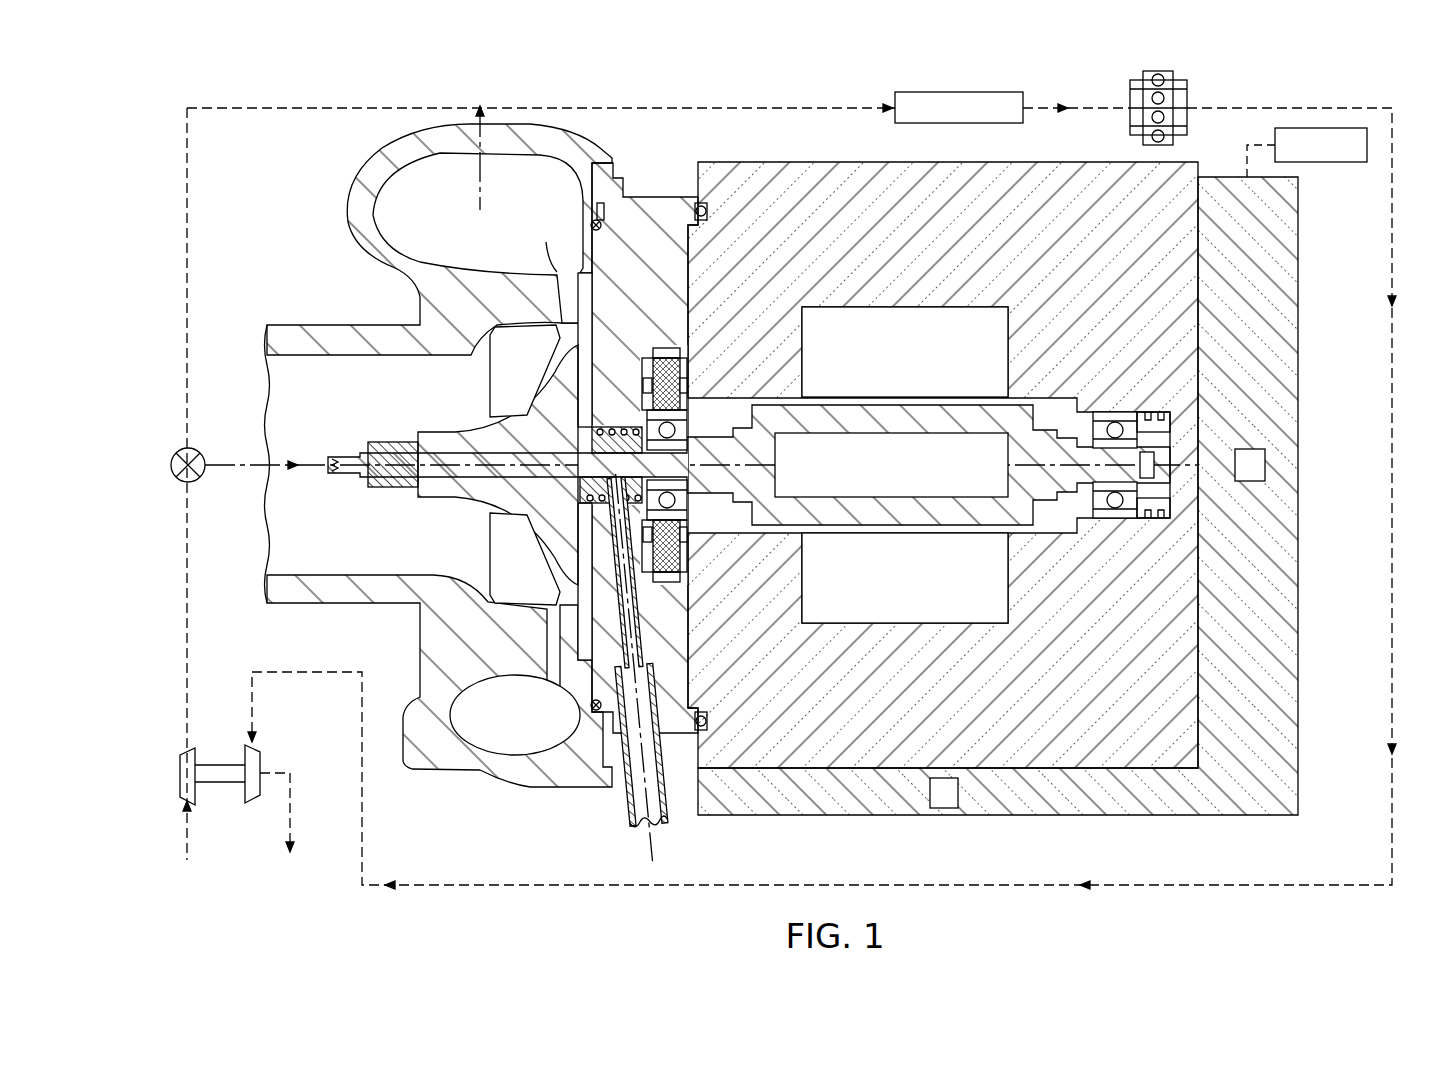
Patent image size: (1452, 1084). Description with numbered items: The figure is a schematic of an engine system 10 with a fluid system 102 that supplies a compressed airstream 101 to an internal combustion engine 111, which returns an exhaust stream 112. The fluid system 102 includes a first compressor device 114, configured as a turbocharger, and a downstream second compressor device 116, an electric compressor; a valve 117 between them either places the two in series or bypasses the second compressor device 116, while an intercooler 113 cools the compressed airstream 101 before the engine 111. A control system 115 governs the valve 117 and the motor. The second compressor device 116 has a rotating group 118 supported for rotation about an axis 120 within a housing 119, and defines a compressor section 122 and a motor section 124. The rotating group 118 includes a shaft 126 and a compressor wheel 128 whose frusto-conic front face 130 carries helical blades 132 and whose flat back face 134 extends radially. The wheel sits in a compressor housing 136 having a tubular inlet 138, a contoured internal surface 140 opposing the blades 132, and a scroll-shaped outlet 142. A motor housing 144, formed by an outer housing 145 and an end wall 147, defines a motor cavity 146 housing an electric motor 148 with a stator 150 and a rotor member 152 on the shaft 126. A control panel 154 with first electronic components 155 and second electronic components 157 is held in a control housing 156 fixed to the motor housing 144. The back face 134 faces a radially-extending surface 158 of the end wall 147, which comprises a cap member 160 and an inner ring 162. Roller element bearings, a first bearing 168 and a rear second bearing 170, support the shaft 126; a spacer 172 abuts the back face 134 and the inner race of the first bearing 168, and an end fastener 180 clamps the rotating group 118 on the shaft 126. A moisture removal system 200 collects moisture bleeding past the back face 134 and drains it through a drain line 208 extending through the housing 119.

The turbocharger system 10 is at (1366, 98).
The compressed airstream 101 is at (616, 108).
The fluid system 102 is at (164, 367).
The internal combustion engine 111 is at (1178, 80).
The exhaust stream 112 is at (1262, 107).
The intercooler 113 is at (985, 92).
The first compressor device 114 is at (165, 751).
The control system 115 is at (1325, 163).
The second compressor device 116 is at (336, 262).
The valve 117 is at (170, 465).
The rotating group 118 is at (498, 423).
The housing 119 is at (440, 310).
The axis 120 is at (486, 478).
The compressor section 122 is at (490, 789).
The motor section 124 is at (762, 822).
The shaft 126 is at (393, 488).
The compressor wheel 128 is at (541, 514).
The front face 130 is at (556, 550).
The blades 132 is at (476, 362).
The back face 134 is at (590, 358).
The compressor housing 136 is at (380, 343).
The inlet 138 is at (266, 364).
The internal surface 140 is at (525, 371).
The outlet 142 is at (418, 226).
The motor housing 144 is at (791, 164).
The outer housing 145 is at (1030, 180).
The motor cavity 146 is at (862, 306).
The end wall 147 is at (616, 264).
The electric motor 148 is at (958, 330).
The stator 150 is at (879, 369).
The rotor member 152 is at (869, 479).
The control panel 154 is at (1298, 818).
The first electronic components 155 is at (943, 808).
The control housing 156 is at (1292, 567).
The second electronic components 157 is at (1250, 447).
The radially-extending surface 158 is at (554, 322).
The cap member 160 is at (688, 318).
The inner ring 162 is at (688, 380).
The first bearing 168 is at (688, 432).
The second bearing 170 is at (1092, 414).
The spacer 172 is at (574, 436).
The end fastener 180 is at (383, 440).
The moisture removal system 200 is at (600, 509).
The drain line 208 is at (583, 693).